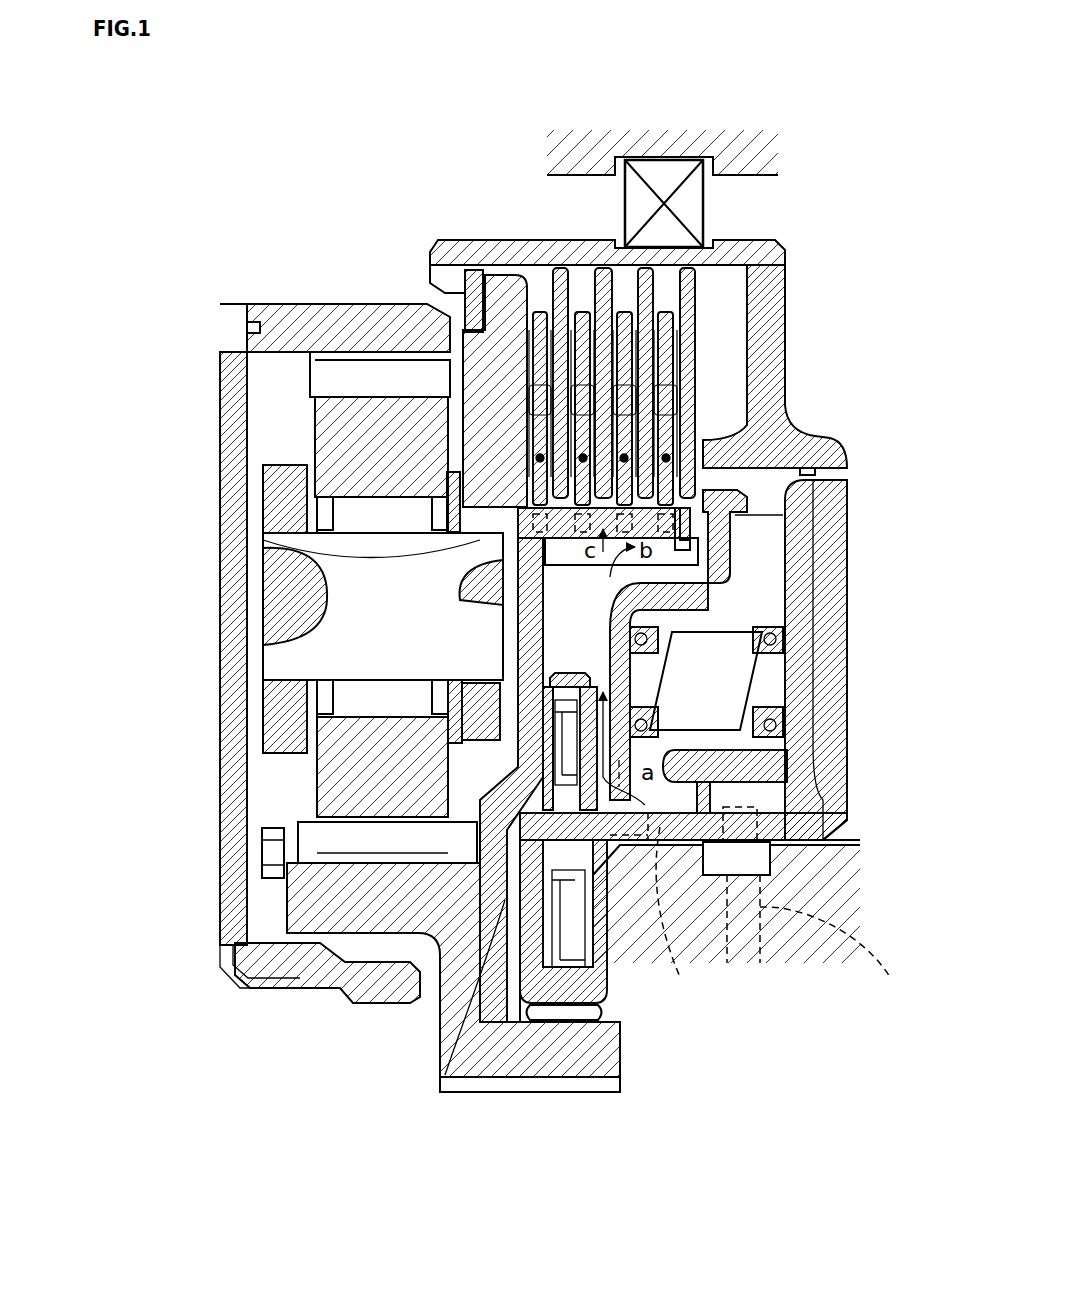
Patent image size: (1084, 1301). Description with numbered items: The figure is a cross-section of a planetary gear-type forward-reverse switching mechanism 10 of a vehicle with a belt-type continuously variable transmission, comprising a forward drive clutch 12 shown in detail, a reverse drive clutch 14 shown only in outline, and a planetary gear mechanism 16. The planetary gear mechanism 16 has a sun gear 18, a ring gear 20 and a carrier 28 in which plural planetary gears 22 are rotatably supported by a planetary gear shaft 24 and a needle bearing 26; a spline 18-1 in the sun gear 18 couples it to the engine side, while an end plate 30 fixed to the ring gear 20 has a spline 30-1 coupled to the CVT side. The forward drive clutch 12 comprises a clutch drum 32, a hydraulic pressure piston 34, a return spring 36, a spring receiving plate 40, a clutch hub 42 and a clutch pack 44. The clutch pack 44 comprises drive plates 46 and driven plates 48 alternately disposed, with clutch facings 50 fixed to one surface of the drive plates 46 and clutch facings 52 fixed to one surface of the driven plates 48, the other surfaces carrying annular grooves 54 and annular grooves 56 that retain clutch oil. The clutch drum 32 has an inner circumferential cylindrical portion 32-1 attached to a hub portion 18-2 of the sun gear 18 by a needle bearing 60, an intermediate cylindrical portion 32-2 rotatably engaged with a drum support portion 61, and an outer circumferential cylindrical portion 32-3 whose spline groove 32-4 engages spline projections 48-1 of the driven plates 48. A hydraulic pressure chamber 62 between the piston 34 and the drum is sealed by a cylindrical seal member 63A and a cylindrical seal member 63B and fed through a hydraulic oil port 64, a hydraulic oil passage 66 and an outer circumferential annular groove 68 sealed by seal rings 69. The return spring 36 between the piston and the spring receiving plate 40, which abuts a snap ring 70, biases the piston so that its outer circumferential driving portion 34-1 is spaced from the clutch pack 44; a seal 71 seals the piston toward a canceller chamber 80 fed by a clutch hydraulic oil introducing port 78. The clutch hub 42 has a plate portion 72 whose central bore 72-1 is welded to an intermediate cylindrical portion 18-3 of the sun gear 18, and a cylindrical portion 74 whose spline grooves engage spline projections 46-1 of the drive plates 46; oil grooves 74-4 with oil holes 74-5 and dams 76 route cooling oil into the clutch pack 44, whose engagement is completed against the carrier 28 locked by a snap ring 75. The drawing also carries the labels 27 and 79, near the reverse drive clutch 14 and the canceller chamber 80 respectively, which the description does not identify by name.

The forward-reverse switching mechanism 10 is at (792, 239).
The forward drive clutch 12 is at (817, 261).
The reverse drive clutch 14 is at (700, 200).
The planetary gear mechanism 16 is at (90, 467).
The sun gear 18 is at (401, 857).
The spline 18-1 is at (460, 1087).
The hub portion 18-2 is at (617, 1057).
The intermediate cylindrical portion 18-3 is at (445, 1077).
The ring gear 20 is at (222, 308).
The planetary gears 22 is at (340, 437).
The planetary gear shaft 24 is at (322, 655).
The needle bearing 26 is at (380, 702).
The yoke 27 is at (760, 160).
The carrier 28 is at (355, 553).
The end plate 30 is at (280, 684).
The spline 30-1 is at (380, 1002).
The clutch drum 32 is at (695, 611).
The inner circumferential cylindrical portion 32-1 is at (607, 987).
The intermediate cylindrical portion 32-2 is at (830, 822).
The outer circumferential cylindrical portion 32-3 is at (503, 250).
The spline groove 32-4 is at (580, 274).
The hydraulic pressure piston 34 is at (805, 545).
The outer circumferential driving portion 34-1 is at (800, 433).
The return spring 36 is at (715, 727).
The spring receiving plate 40 is at (612, 653).
The clutch hub 42 is at (403, 632).
The clutch pack 44 is at (690, 386).
The drive plates 46 is at (667, 318).
The spline projections 46-1 is at (487, 453).
The driven plates 48 is at (687, 287).
The spline projection 48-1 is at (745, 268).
The clutch facings 50 is at (700, 382).
The clutch facings 52 is at (693, 353).
The annular grooves 54 is at (663, 413).
The annular grooves 56 is at (660, 398).
The needle bearing 60 is at (600, 1013).
The drum support portion 61 is at (860, 845).
The hydraulic pressure chamber 62 is at (817, 495).
The cylindrical seal member 63A is at (790, 760).
The cylindrical seal member 63B is at (812, 468).
The hydraulic oil port 64 is at (705, 792).
The hydraulic oil passage 66 is at (870, 975).
The outer circumferential annular groove 68 is at (757, 868).
The seal ring 69 is at (700, 848).
The snap ring 70 is at (595, 817).
The seal 71 is at (790, 515).
The plate portion 72 is at (528, 680).
The central bore 72-1 is at (440, 990).
The cylindrical portion 74 is at (570, 571).
The oil grooves 74-4 is at (550, 557).
The oil holes 74-5 is at (722, 545).
The snap ring 75 is at (470, 303).
The dams 76 is at (720, 573).
The clutch hydraulic oil introducing port 78 is at (640, 965).
The bearing chamber 79 is at (747, 604).
The canceller chamber 80 is at (706, 682).